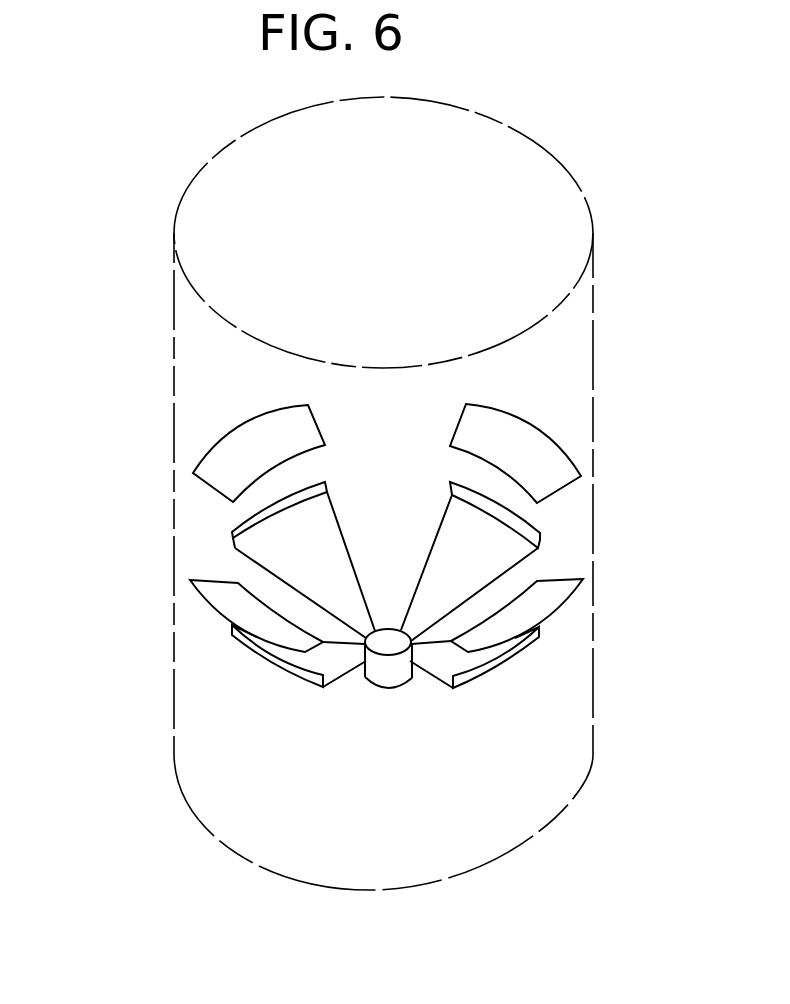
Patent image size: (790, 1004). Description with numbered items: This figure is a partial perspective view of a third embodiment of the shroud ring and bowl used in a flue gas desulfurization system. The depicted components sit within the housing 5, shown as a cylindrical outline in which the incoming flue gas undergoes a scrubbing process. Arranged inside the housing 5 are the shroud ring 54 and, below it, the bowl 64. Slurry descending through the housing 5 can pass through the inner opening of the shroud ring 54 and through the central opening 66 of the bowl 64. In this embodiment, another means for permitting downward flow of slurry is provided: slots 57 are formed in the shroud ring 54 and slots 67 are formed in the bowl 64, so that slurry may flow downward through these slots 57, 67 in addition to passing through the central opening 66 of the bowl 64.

The housing 5 is at (116, 249).
The shroud ring 54 is at (530, 462).
The slots 57 is at (206, 542).
The bowl 64 is at (500, 553).
The central opening 66 is at (388, 640).
The slots 67 is at (392, 568).